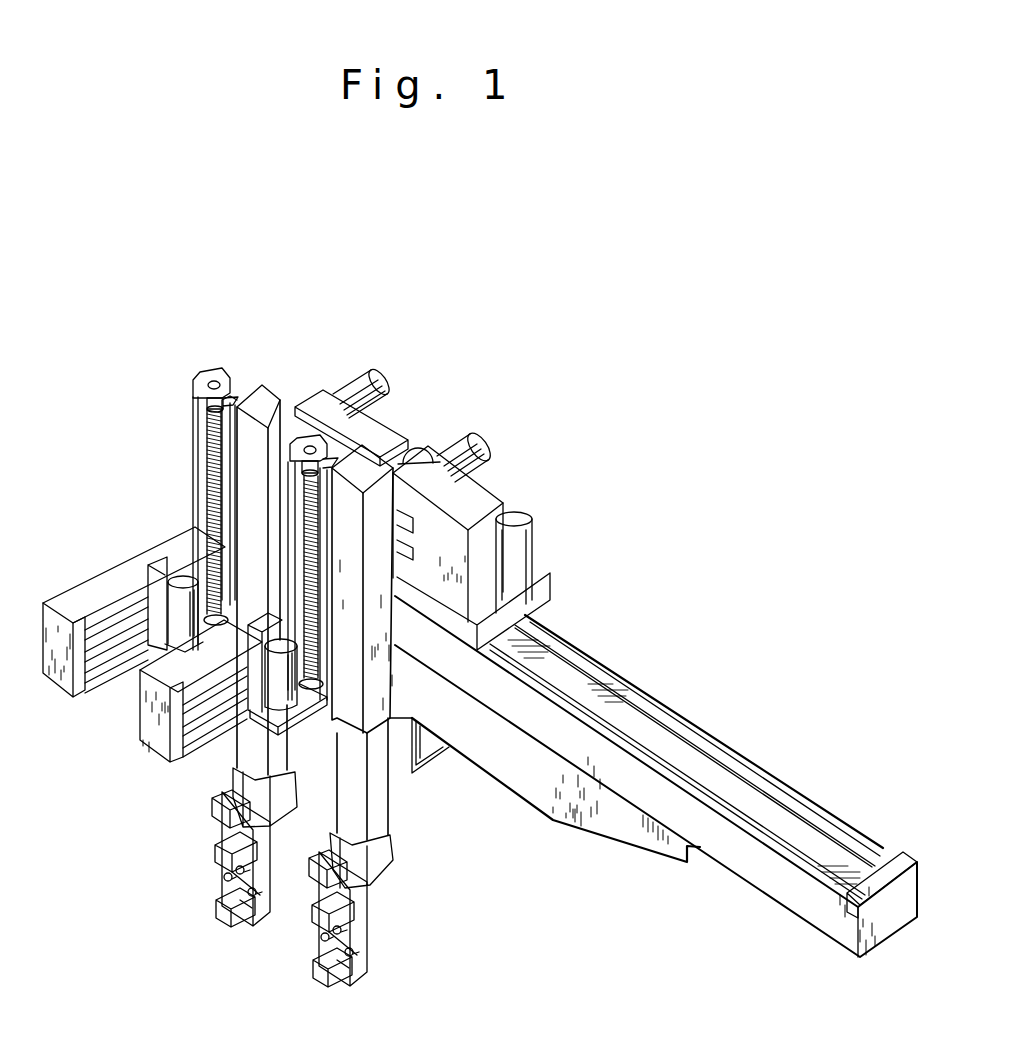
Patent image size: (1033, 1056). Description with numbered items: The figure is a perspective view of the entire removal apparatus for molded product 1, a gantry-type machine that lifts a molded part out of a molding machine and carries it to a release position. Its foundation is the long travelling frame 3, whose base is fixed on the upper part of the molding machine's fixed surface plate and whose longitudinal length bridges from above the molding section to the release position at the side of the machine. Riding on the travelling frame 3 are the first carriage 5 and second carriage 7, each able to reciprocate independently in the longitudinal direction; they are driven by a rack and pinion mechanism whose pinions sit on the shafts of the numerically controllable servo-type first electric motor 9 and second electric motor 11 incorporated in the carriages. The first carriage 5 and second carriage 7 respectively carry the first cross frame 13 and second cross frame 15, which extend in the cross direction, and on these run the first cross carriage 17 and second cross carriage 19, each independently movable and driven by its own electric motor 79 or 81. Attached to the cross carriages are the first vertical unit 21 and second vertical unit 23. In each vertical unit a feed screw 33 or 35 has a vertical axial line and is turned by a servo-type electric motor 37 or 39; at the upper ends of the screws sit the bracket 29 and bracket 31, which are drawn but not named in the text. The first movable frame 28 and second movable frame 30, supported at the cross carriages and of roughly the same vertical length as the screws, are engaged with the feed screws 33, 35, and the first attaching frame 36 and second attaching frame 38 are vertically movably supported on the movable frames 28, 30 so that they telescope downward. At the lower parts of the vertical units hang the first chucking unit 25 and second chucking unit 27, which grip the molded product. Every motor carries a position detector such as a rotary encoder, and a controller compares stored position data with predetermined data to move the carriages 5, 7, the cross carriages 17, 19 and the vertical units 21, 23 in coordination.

The removal apparatus for molded product 1 is at (588, 452).
The travelling frame 3 is at (627, 827).
The first carriage 5 is at (323, 405).
The second carriage 7 is at (468, 510).
The first electric motor 9 is at (427, 445).
The second electric motor 11 is at (527, 539).
The first cross frame 13 is at (107, 570).
The second cross frame 15 is at (163, 673).
The first cross carriage 17 is at (170, 537).
The second cross carriage 19 is at (260, 623).
The first vertical unit 21 is at (254, 360).
The second vertical unit 23 is at (346, 439).
The first chucking unit 25 is at (203, 896).
The second chucking unit 27 is at (303, 961).
The first movable frame 28 is at (263, 398).
The first nut bracket 29 is at (202, 383).
The second movable frame 30 is at (425, 770).
The second column 31 is at (310, 438).
The first feed screw 33 is at (213, 457).
The second feed screw 35 is at (282, 538).
The first attaching frame 36 is at (257, 753).
The electric motor 37 is at (177, 613).
The second attaching frame 38 is at (375, 805).
The electric motor 39 is at (283, 683).
The electric motor 79 is at (370, 387).
The electric motor 81 is at (468, 450).